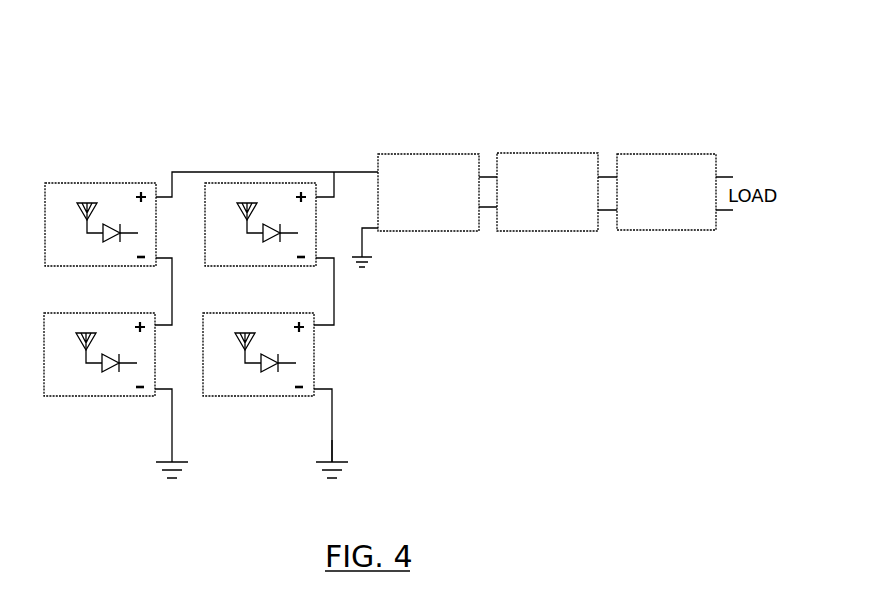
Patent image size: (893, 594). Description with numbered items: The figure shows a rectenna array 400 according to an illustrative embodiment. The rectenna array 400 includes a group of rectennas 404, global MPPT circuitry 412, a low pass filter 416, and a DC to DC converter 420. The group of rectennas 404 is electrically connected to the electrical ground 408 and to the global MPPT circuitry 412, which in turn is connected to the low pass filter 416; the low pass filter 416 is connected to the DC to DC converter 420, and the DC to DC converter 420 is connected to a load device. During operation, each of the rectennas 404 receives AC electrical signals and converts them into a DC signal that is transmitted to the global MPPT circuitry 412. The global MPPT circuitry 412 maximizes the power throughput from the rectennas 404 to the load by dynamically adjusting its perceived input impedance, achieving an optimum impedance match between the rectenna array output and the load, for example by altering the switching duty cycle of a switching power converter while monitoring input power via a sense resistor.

The rectenna array 400 is at (575, 128).
The rectennas 404 is at (240, 183).
The electrical ground 408 is at (334, 424).
The global MPPT circuitry 412 is at (415, 210).
The low pass filter 416 is at (538, 192).
The DC to DC converter 420 is at (665, 192).